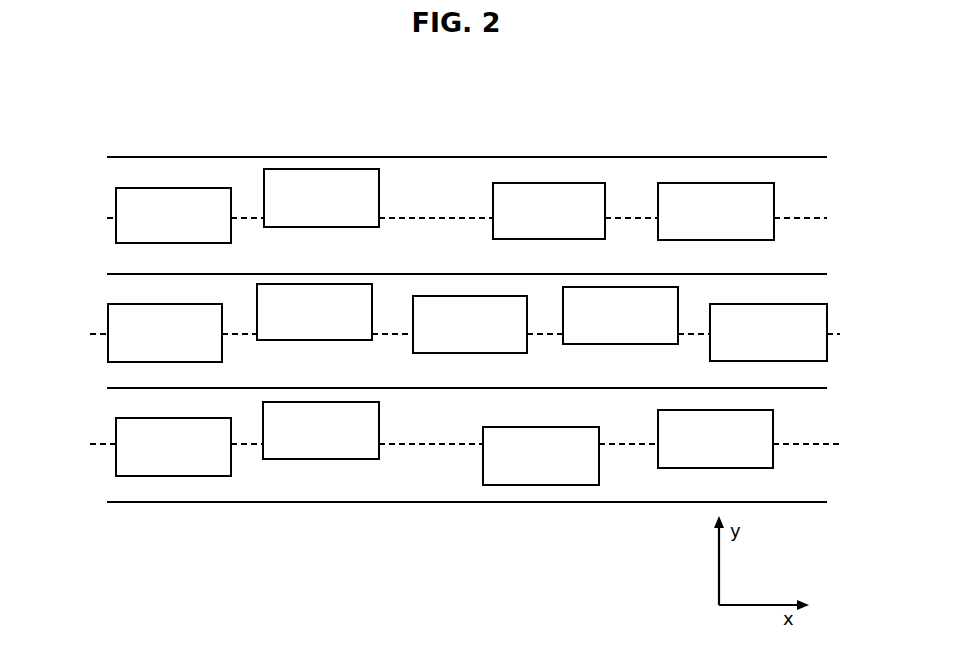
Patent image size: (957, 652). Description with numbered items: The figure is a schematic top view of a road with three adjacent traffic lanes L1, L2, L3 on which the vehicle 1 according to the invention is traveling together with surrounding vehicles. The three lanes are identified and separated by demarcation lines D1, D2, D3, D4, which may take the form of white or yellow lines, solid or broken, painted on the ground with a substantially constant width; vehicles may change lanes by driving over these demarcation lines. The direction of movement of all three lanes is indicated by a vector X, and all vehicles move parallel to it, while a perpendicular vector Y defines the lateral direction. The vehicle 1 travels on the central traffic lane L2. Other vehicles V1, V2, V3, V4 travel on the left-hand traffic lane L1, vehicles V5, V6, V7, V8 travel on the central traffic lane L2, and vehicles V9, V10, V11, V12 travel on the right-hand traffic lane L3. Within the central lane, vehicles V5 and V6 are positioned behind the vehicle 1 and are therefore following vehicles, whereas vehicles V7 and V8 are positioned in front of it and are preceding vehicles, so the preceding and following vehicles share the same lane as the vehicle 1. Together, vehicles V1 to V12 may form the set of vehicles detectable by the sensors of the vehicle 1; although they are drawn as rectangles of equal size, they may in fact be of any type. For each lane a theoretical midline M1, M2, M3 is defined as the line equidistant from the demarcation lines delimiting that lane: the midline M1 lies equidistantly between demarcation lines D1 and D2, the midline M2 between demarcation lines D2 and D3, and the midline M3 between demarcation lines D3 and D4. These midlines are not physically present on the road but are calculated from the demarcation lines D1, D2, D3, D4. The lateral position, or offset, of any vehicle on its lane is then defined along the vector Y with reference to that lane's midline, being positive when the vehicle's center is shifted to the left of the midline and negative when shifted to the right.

The vehicle 1 is at (470, 353).
The demarcation line D1 is at (615, 157).
The demarcation line D2 is at (658, 273).
The demarcation line D3 is at (582, 387).
The demarcation line D4 is at (623, 502).
The midline M1 is at (793, 217).
The midline M2 is at (837, 335).
The midline M3 is at (792, 444).
The traffic lane L1 is at (100, 201).
The traffic lane L2 is at (88, 315).
The traffic lane L3 is at (97, 428).
The vehicle V1 is at (173, 215).
The vehicle V2 is at (321, 198).
The vehicle V3 is at (549, 211).
The vehicle V4 is at (716, 211).
The vehicle V5 is at (165, 333).
The vehicle V6 is at (314, 312).
The vehicle V7 is at (620, 315).
The vehicle V8 is at (768, 332).
The vehicle V9 is at (173, 447).
The vehicle V10 is at (321, 430).
The vehicle V11 is at (541, 456).
The vehicle V12 is at (715, 439).